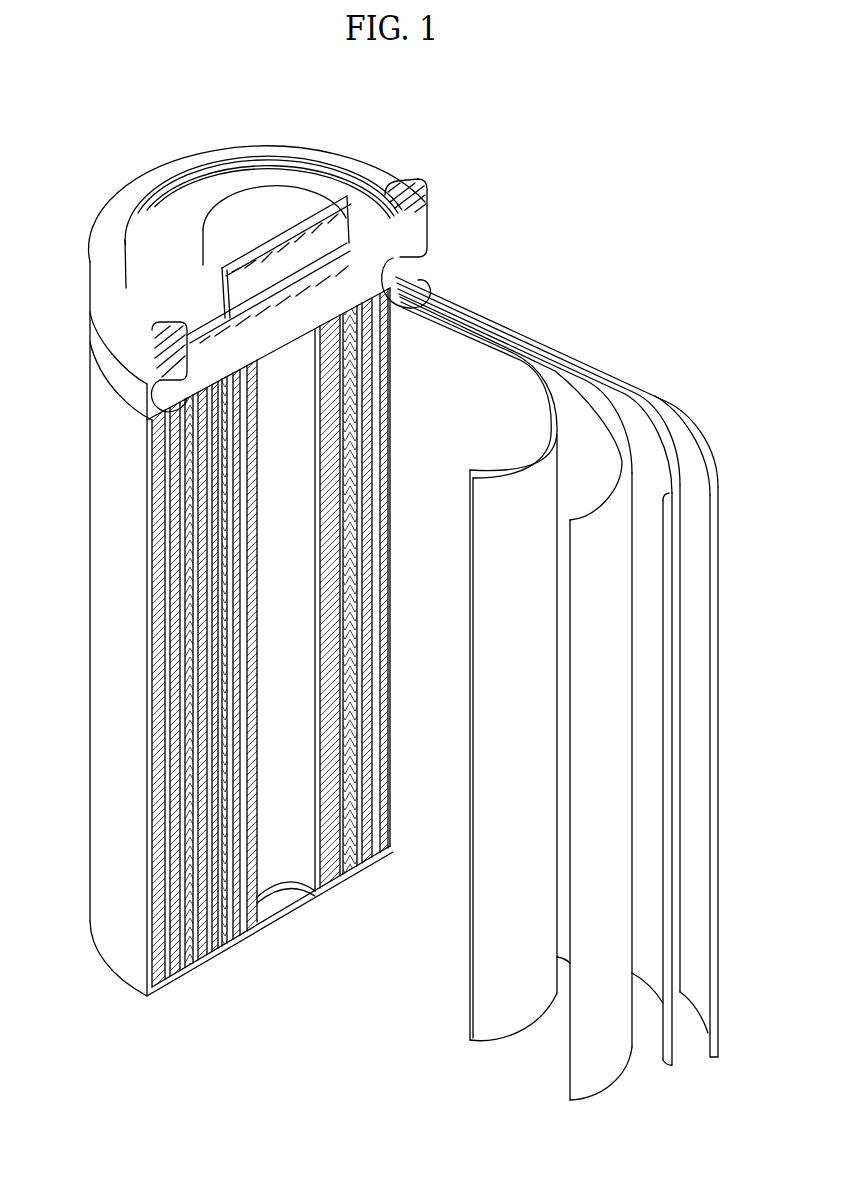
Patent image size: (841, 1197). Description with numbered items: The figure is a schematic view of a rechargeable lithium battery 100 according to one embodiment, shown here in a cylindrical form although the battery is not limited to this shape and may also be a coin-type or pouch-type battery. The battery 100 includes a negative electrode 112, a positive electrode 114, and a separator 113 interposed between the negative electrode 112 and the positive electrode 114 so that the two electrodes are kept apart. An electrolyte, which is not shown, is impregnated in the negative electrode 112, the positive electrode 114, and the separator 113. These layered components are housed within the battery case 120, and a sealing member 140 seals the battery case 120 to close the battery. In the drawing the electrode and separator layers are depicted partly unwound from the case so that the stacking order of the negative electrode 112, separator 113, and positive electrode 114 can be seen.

The rechargeable lithium battery 100 is at (458, 153).
The negative electrode 112 is at (706, 455).
The separator 113 is at (540, 365).
The positive electrode 114 is at (577, 398).
The battery case 120 is at (108, 522).
The sealing member 140 is at (235, 205).